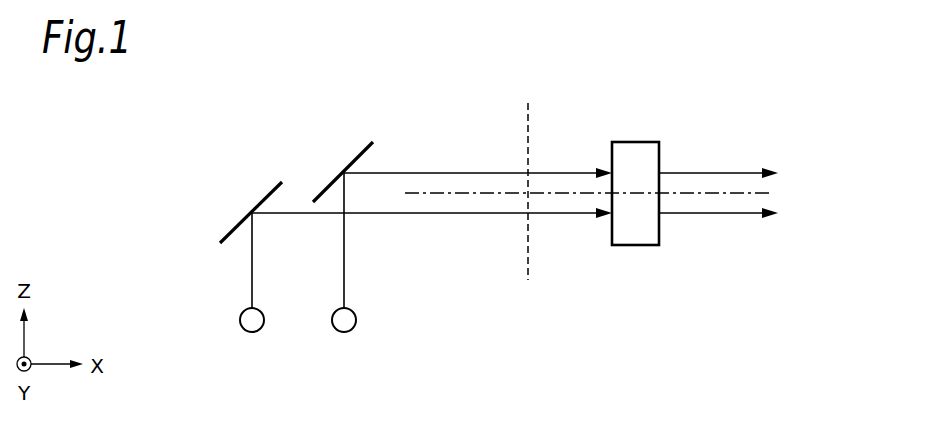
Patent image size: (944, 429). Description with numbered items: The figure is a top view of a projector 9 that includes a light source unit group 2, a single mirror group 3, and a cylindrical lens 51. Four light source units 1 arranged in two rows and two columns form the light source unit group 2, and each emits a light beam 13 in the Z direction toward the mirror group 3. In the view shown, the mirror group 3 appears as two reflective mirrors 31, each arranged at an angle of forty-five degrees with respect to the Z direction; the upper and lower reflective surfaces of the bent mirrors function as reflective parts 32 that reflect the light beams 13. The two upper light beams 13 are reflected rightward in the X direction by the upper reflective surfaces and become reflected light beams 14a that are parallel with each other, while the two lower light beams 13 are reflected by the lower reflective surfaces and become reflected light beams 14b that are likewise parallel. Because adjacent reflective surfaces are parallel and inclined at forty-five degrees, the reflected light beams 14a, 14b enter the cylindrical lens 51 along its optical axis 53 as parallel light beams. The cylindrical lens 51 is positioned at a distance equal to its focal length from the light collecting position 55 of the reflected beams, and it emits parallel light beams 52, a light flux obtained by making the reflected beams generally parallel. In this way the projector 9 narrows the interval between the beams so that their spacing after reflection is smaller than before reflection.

The light source unit 1 is at (235, 353).
The light source unit group 2 is at (195, 334).
The mirror group 3 is at (245, 172).
The reflective mirror 31 is at (296, 171).
The reflective part 32 is at (360, 157).
The light beam 13 is at (344, 248).
The reflected light beam 14a is at (472, 173).
The reflected light beam 14b is at (457, 213).
The light collecting position 55 is at (528, 152).
The projector 9 is at (663, 146).
The cylindrical lens 51 is at (635, 152).
The parallel light beams 52 is at (745, 173).
The optical axis 53 is at (703, 193).